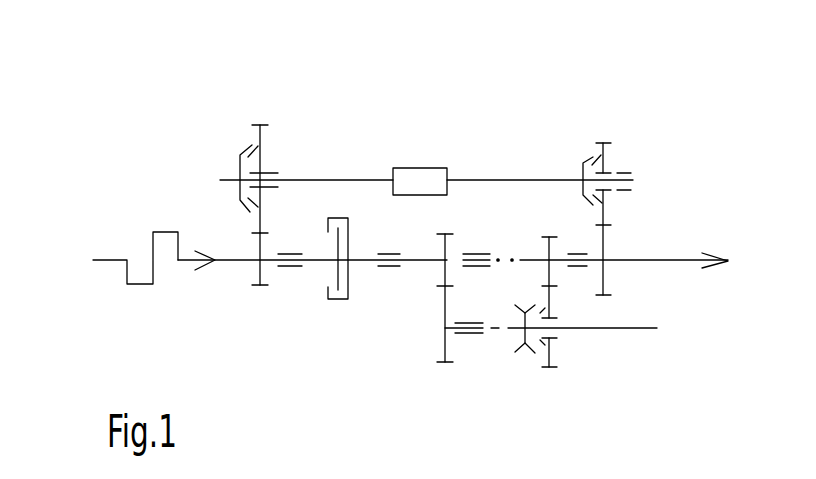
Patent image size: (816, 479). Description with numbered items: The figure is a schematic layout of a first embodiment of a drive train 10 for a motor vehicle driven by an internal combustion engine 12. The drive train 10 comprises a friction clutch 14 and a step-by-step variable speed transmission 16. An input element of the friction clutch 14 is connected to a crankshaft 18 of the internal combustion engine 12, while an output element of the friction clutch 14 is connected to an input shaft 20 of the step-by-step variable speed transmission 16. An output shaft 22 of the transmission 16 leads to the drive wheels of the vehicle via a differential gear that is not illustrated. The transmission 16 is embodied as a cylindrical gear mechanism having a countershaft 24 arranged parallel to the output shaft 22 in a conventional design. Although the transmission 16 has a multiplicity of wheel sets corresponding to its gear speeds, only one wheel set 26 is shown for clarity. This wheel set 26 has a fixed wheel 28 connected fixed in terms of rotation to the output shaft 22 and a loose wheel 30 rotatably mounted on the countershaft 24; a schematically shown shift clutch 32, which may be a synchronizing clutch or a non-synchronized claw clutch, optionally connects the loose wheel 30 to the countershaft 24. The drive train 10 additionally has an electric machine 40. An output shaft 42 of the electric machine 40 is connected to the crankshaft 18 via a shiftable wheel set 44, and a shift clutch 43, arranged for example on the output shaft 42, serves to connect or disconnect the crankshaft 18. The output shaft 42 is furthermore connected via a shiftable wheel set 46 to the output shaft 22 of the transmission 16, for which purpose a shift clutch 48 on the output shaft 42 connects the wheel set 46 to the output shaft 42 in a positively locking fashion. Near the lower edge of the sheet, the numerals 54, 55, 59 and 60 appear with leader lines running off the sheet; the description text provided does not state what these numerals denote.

The drive train 10 is at (150, 131).
The internal combustion engine 12 is at (142, 285).
The friction clutch 14 is at (338, 300).
The step-by-step variable speed transmission 16 is at (609, 356).
The crankshaft 18 is at (234, 261).
The input shaft 20 is at (422, 263).
The output shaft 22 is at (668, 257).
The countershaft 24 is at (628, 327).
The wheel set 26 is at (559, 388).
The fixed wheel 28 is at (543, 240).
The loose wheel 30 is at (543, 360).
The shift clutch 32 is at (514, 364).
The electric machine 40 is at (417, 167).
The output shaft 42 is at (353, 178).
The shift clutch 43 is at (233, 128).
The shiftable wheel set 44 is at (261, 100).
The shiftable wheel set 46 is at (616, 129).
The shift clutch 48 is at (582, 149).
The component 54 is at (8, 468).
The component 55 is at (589, 471).
The component 59 is at (507, 478).
The component 60 is at (327, 478).